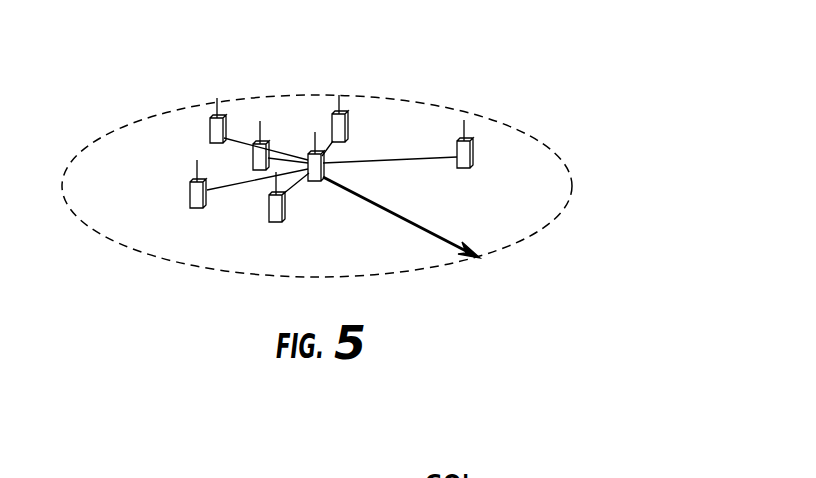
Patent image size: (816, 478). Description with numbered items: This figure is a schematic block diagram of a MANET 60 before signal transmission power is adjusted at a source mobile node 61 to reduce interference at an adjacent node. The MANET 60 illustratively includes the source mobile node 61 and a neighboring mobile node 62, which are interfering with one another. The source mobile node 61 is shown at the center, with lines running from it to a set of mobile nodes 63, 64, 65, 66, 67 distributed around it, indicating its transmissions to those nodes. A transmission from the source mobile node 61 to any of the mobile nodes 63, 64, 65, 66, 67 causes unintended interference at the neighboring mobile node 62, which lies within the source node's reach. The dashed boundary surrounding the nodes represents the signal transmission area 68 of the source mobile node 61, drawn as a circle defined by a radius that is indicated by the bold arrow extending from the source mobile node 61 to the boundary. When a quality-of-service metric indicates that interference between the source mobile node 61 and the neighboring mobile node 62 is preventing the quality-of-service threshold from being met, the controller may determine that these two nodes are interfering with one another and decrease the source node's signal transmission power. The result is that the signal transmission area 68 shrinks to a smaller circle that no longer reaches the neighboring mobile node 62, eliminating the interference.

The MANET 60 is at (529, 63).
The source mobile node 61 is at (308, 157).
The neighboring mobile node 62 is at (473, 150).
The mobile node 63 is at (210, 125).
The mobile node 64 is at (347, 120).
The mobile node 65 is at (253, 158).
The mobile node 66 is at (190, 208).
The mobile node 67 is at (268, 221).
The signal transmission area 68 is at (573, 174).